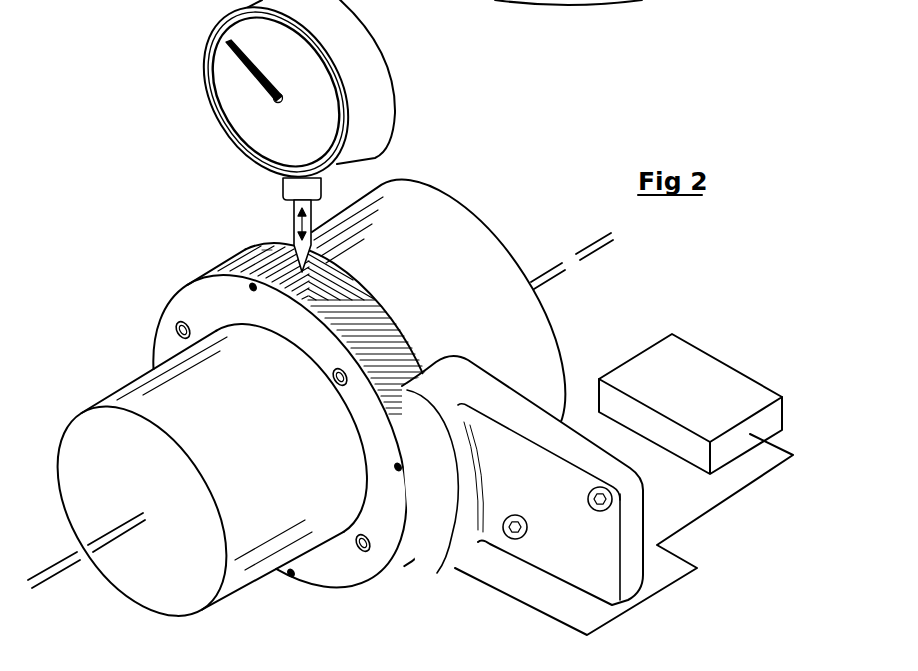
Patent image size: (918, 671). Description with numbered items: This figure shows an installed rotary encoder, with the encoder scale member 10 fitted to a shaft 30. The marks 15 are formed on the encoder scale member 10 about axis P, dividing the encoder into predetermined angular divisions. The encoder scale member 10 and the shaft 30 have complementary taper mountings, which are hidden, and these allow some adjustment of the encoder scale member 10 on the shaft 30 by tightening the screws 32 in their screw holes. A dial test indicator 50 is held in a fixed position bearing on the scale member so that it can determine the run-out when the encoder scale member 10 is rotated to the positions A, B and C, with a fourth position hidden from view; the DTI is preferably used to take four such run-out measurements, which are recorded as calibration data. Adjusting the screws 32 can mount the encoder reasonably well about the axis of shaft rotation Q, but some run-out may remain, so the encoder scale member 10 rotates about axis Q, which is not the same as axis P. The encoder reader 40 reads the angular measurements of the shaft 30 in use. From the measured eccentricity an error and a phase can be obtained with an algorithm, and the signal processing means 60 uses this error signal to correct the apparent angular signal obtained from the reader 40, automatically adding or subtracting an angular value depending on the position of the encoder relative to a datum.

The encoder scale member 10 is at (200, 303).
The marks 15 is at (267, 252).
The shaft 30 is at (398, 212).
The screws 32 is at (178, 336).
The encoder reader 40 is at (443, 510).
The dial test indicator 50 is at (368, 87).
The signal processing means 60 is at (673, 377).
The measurement position A is at (221, 277).
The measurement position B is at (397, 471).
The measurement position C is at (292, 573).
The axis P is at (66, 554).
The axis of shaft rotation Q is at (60, 574).